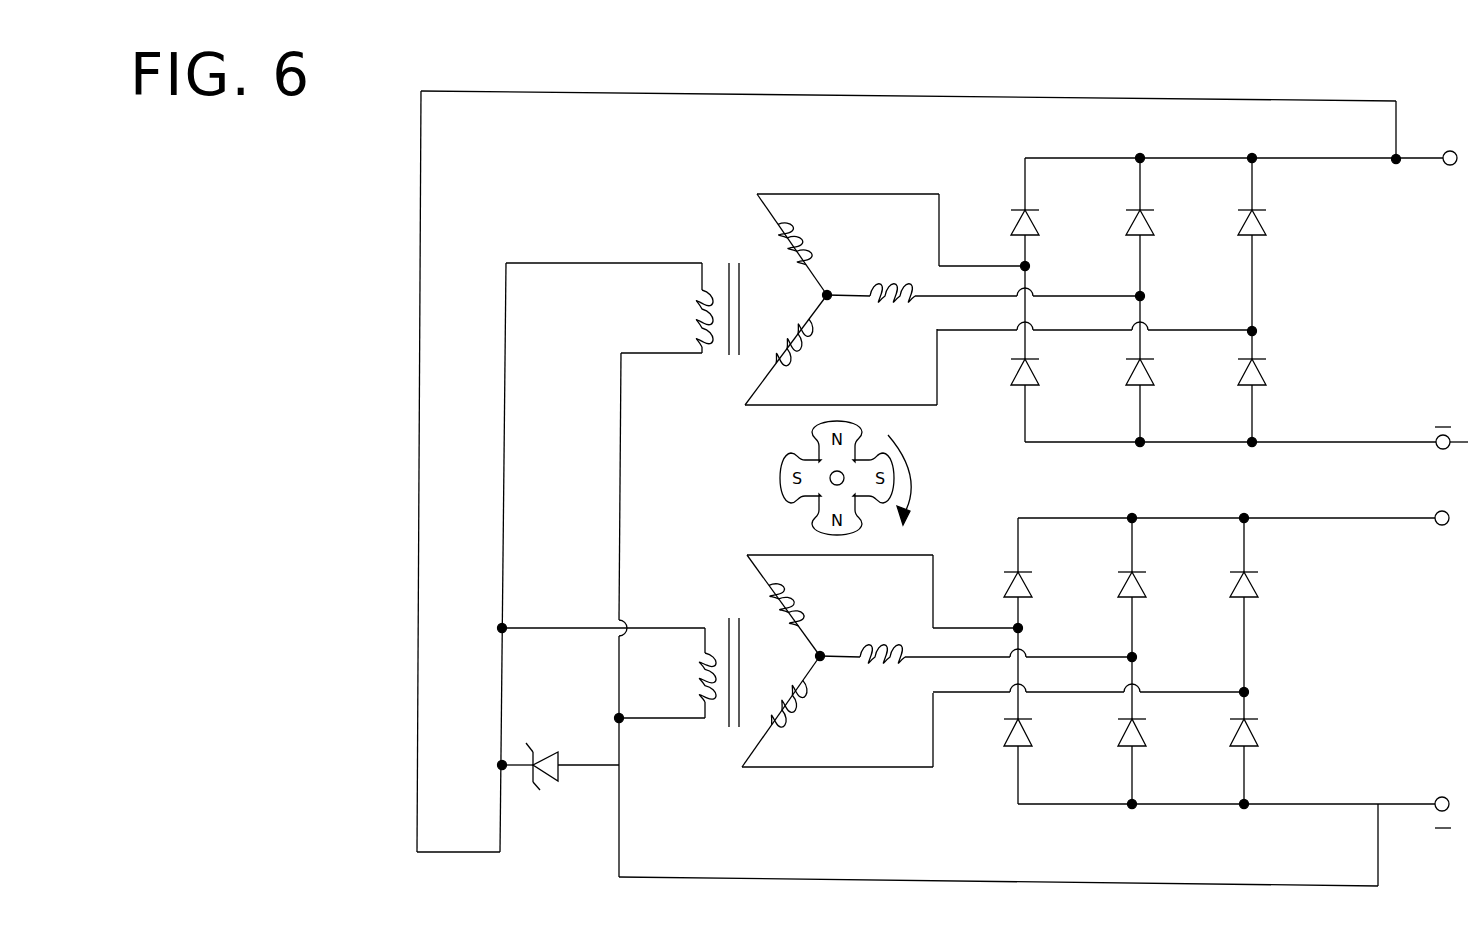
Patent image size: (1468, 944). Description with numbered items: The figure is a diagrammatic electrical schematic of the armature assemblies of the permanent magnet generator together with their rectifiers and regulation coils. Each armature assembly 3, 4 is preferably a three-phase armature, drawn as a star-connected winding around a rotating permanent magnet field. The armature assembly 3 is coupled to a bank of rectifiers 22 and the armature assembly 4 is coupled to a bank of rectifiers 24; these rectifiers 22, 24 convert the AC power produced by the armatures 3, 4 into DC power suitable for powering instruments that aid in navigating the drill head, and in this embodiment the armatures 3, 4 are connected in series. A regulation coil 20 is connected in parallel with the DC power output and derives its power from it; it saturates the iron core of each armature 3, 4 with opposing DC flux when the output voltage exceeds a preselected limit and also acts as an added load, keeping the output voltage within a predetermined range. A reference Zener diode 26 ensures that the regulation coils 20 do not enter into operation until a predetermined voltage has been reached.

The armature assembly 3 is at (1001, 299).
The armature assembly 4 is at (995, 661).
The regulation coil 20 is at (679, 495).
The bank of rectifiers 22 is at (1239, 287).
The bank of rectifiers 24 is at (1228, 669).
The reference Zener diode 26 is at (560, 745).